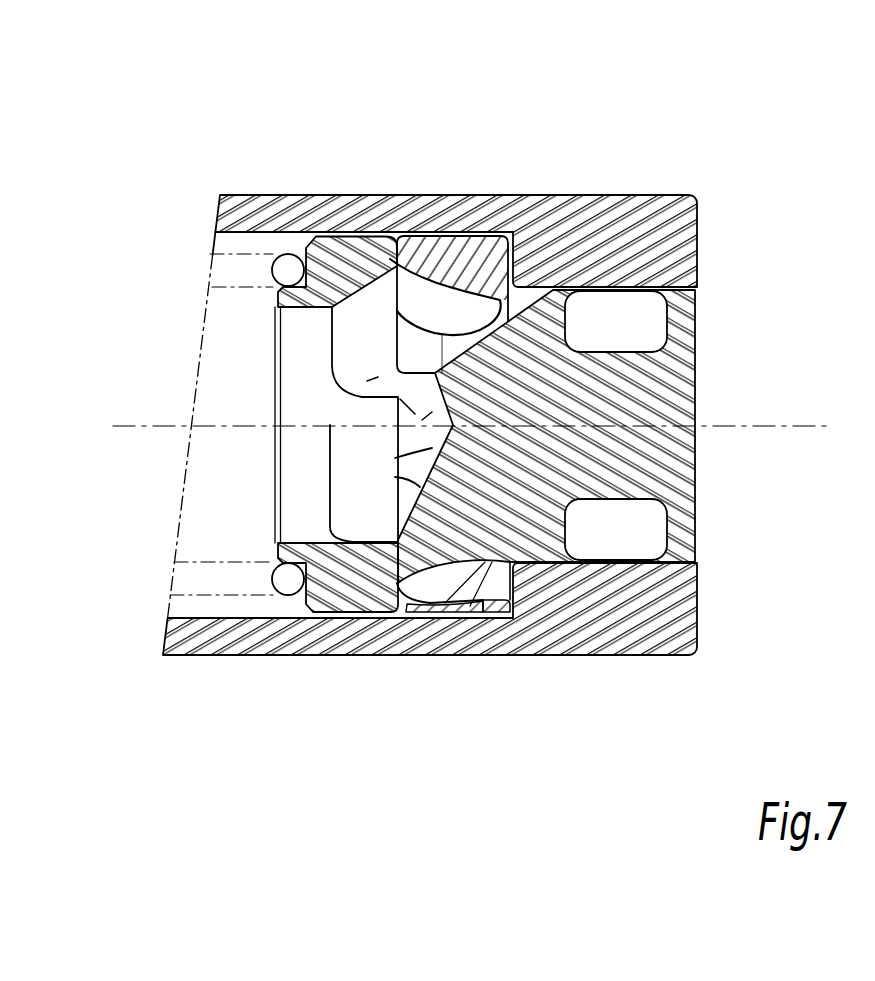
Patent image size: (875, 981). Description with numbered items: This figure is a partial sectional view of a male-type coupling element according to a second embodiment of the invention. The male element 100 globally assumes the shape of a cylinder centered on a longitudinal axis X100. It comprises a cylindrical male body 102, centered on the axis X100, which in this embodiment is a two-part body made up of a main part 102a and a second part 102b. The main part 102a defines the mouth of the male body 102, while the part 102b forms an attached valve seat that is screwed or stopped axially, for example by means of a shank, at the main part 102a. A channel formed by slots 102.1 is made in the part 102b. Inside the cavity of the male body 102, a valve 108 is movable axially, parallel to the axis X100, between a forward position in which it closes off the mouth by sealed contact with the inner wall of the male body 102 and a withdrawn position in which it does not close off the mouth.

The male element 100 is at (722, 182).
The male body 102 is at (505, 29).
The main part of the male body 102a is at (367, 215).
The attached valve seat part 102b is at (485, 263).
The slots 102.1 is at (543, 288).
The valve 108 is at (645, 466).
The longitudinal axis X100 is at (446, 429).